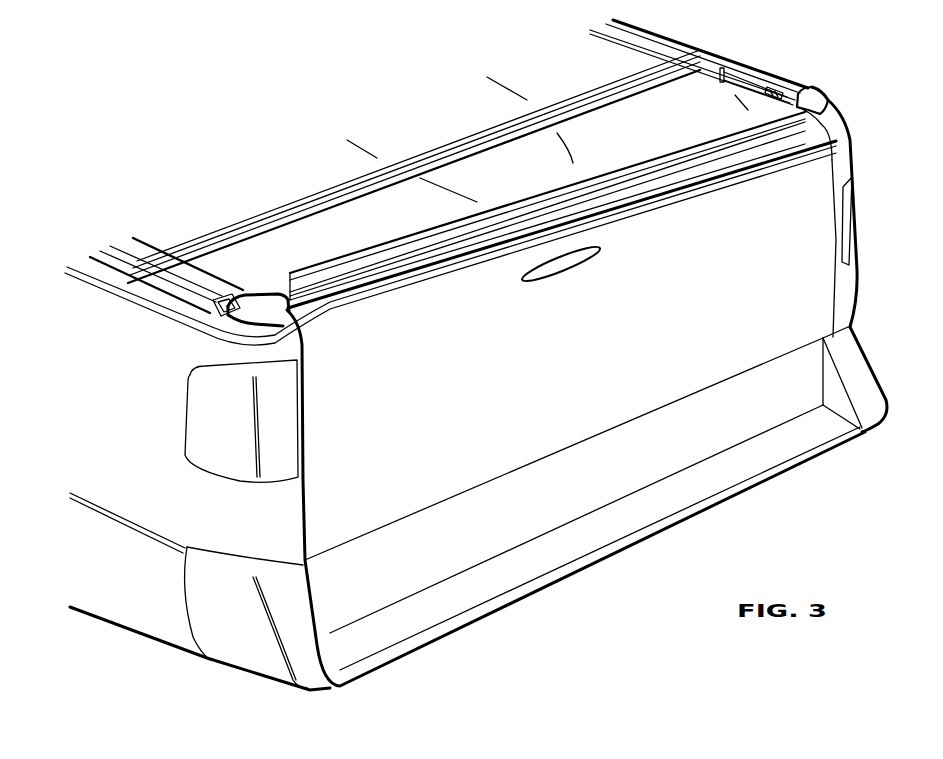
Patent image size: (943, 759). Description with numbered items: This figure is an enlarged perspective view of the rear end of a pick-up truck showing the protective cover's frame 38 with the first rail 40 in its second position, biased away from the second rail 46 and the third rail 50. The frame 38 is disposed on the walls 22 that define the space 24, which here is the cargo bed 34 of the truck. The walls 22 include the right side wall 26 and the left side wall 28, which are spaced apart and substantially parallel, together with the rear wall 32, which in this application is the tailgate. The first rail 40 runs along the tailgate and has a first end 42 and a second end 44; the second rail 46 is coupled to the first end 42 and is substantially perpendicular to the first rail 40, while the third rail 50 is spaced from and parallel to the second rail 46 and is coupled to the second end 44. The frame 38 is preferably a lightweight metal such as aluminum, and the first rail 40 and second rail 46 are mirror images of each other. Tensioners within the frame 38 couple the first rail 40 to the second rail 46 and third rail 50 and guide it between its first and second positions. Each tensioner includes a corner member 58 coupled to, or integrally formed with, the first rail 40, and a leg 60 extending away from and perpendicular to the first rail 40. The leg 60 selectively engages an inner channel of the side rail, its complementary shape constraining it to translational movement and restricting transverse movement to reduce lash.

The walls 22 is at (633, 72).
The space 24 is at (290, 167).
The right side wall 26 is at (747, 108).
The left side wall 28 is at (143, 397).
The rear wall 32 is at (487, 450).
The cargo bed 34 is at (137, 643).
The frame 38 is at (660, 36).
The first rail 40 is at (638, 160).
The first end 42 is at (282, 296).
The second end 44 is at (800, 100).
The second rail 46 is at (155, 255).
The third rail 50 is at (765, 77).
The corner member 58 is at (822, 102).
The leg 60 is at (213, 312).